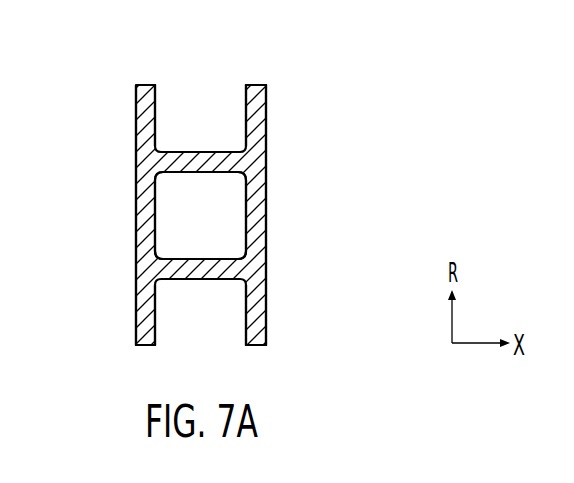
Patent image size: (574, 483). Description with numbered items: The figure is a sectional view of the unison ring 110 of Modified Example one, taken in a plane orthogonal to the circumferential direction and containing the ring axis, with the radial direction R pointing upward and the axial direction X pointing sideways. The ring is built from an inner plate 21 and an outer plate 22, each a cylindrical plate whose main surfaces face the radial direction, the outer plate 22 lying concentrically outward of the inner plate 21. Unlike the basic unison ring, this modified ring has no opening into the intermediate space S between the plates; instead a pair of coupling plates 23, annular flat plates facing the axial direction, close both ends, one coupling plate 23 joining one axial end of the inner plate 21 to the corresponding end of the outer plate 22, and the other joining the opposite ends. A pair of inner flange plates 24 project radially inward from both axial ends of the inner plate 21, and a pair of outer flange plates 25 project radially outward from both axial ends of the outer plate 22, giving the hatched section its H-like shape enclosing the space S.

The unison ring 110 is at (284, 76).
The outer plate 22 is at (200, 152).
The inner plate 21 is at (201, 280).
The coupling plate 23 is at (136, 212).
The inner flange plate 24 is at (136, 312).
The outer flange plate 25 is at (136, 126).
The intermediate space S is at (206, 229).